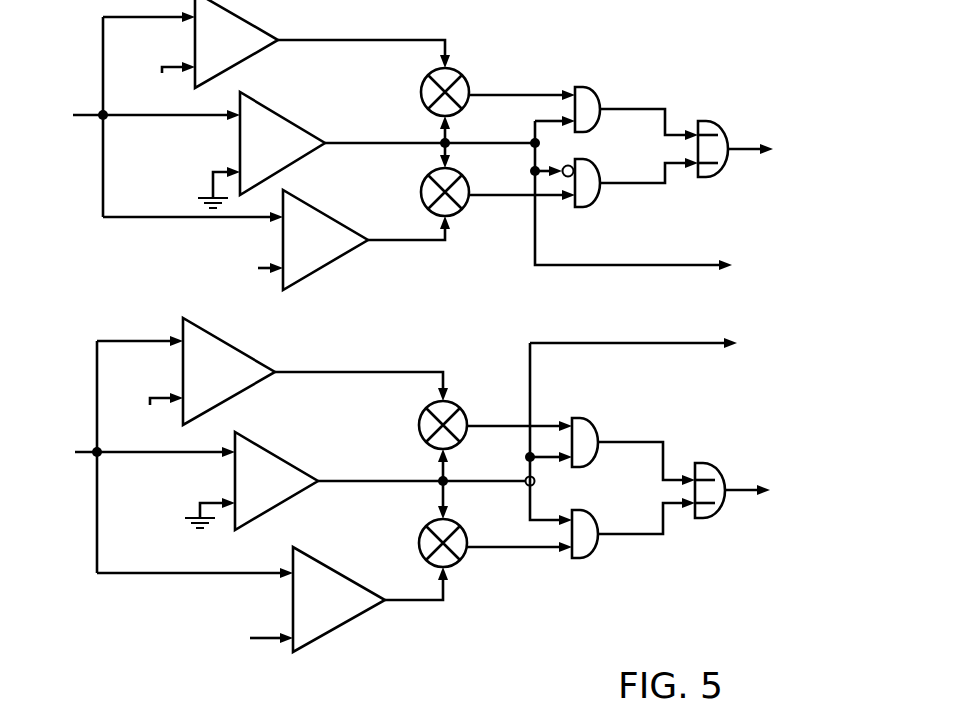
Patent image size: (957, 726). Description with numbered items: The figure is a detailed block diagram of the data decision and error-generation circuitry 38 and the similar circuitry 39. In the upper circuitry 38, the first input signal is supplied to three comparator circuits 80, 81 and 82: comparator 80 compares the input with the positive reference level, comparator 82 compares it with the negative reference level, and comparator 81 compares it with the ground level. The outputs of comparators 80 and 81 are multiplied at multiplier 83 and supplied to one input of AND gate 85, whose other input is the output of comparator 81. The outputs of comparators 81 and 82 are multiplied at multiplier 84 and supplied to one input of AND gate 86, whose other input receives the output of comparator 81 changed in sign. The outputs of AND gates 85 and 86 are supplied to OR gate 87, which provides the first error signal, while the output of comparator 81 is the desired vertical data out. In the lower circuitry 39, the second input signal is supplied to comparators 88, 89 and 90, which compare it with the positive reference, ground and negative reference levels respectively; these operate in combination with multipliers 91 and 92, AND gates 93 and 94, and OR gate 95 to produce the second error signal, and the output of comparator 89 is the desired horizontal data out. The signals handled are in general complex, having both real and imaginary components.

The data decision and error-generation circuitry 38 is at (455, 53).
The data decision and error-generation circuitry 39 is at (443, 633).
The comparator circuit 80 is at (252, 24).
The comparator circuit 81 is at (272, 113).
The comparator circuit 82 is at (320, 211).
The multiplier 83 is at (468, 81).
The multiplier 84 is at (467, 180).
The AND gate 85 is at (598, 93).
The AND gate 86 is at (593, 201).
The OR gate 87 is at (718, 122).
The comparator circuit 88 is at (228, 345).
The comparator circuit 89 is at (283, 462).
The comparator circuit 90 is at (331, 565).
The multiplier 91 is at (467, 412).
The multiplier 92 is at (466, 564).
The AND gate 93 is at (590, 425).
The AND gate 94 is at (589, 555).
The OR gate 95 is at (712, 463).